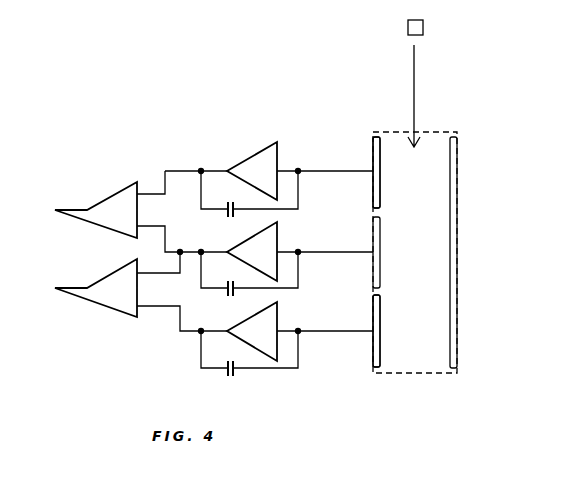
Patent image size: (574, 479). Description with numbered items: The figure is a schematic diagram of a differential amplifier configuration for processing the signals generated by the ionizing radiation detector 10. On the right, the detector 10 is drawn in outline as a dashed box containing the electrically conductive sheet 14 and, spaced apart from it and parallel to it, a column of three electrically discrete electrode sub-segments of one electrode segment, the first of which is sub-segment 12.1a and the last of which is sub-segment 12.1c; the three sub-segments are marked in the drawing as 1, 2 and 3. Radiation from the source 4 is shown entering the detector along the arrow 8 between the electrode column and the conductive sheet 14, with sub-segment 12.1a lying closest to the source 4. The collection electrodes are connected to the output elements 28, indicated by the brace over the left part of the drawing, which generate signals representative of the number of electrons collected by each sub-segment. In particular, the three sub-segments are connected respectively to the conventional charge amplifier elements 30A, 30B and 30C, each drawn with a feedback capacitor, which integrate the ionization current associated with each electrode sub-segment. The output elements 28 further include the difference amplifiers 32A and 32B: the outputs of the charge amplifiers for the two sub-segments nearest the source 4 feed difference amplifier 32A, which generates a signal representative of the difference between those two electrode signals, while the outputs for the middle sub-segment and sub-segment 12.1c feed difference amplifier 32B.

The source 4 is at (423, 28).
The incident beam 8 is at (414, 83).
The ionizing radiation detector 10 is at (484, 276).
The electrically conductive sheet 14 is at (459, 172).
The electrode sub-segment 12.1a is at (373, 142).
The electrode sub-segment 12.1c is at (366, 366).
The electrode segment 1 is at (383, 172).
The electrode segment 2 is at (383, 252).
The electrode segment 3 is at (383, 331).
The output elements 28 is at (53, 108).
The charge amplifier element 30A is at (268, 160).
The charge amplifier element 30B is at (272, 247).
The charge amplifier element 30C is at (272, 327).
The difference amplifier 32A is at (122, 202).
The difference amplifier 32B is at (118, 285).